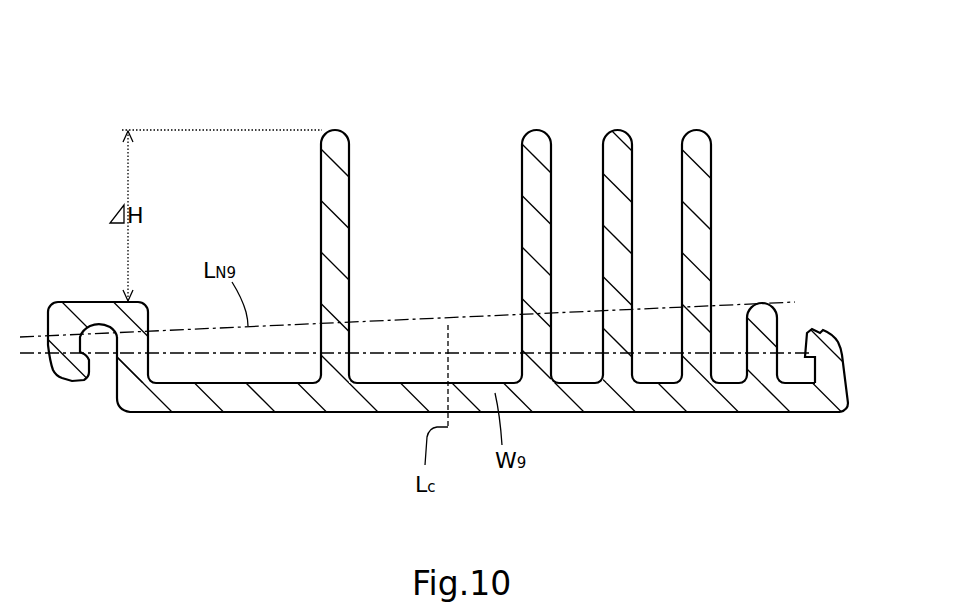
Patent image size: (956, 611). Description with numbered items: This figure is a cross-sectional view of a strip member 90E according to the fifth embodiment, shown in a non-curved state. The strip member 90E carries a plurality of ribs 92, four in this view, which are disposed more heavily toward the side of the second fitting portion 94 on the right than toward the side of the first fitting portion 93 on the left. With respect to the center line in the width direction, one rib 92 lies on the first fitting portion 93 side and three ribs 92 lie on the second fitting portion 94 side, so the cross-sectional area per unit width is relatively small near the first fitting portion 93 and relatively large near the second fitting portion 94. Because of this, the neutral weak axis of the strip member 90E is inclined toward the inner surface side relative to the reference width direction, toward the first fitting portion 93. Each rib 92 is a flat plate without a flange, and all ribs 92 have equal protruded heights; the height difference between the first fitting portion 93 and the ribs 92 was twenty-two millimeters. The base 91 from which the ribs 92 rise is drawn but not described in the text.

The strip member 90E is at (89, 126).
The base plate 91 is at (258, 413).
The rib 92 is at (352, 147).
The first fitting portion 93 is at (84, 300).
The second fitting portion 94 is at (825, 333).